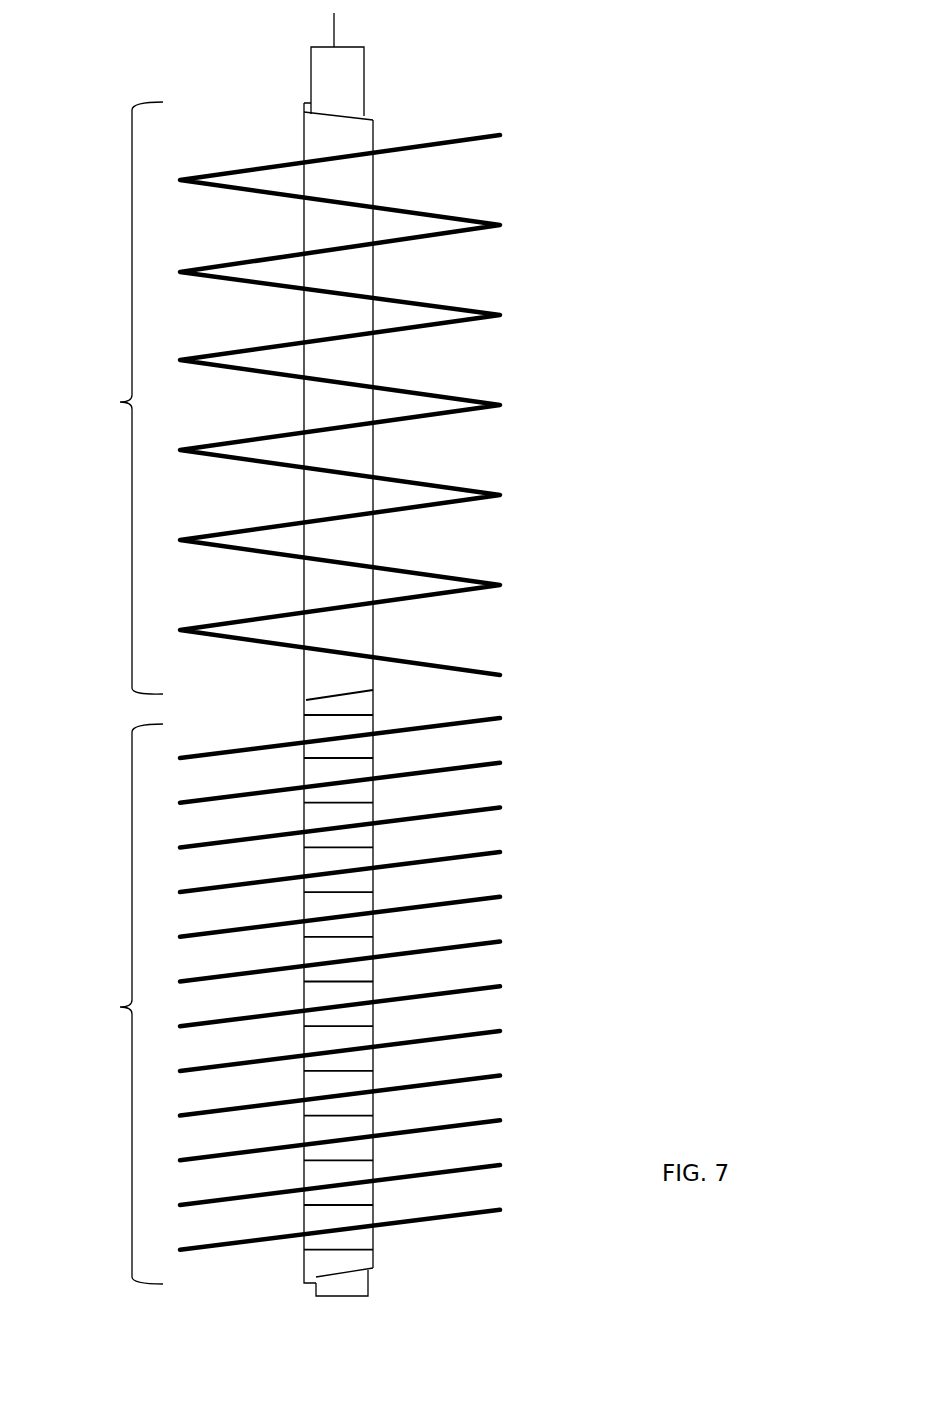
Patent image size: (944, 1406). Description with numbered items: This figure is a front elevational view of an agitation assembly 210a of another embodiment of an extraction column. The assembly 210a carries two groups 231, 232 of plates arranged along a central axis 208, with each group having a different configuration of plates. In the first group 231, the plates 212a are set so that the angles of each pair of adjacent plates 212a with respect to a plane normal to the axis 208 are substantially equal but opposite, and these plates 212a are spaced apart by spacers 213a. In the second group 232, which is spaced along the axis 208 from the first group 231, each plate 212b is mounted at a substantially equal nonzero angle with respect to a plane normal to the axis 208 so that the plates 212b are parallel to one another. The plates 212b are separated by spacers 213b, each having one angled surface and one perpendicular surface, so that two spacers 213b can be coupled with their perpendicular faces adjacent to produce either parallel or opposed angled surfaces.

The axis 208 is at (335, 33).
The assembly 210a is at (478, 53).
The plates 212a is at (420, 214).
The spacers 213a is at (352, 273).
The plates 212b is at (475, 727).
The spacers 213b is at (360, 833).
The first group 231 is at (120, 402).
The second group 232 is at (120, 1007).